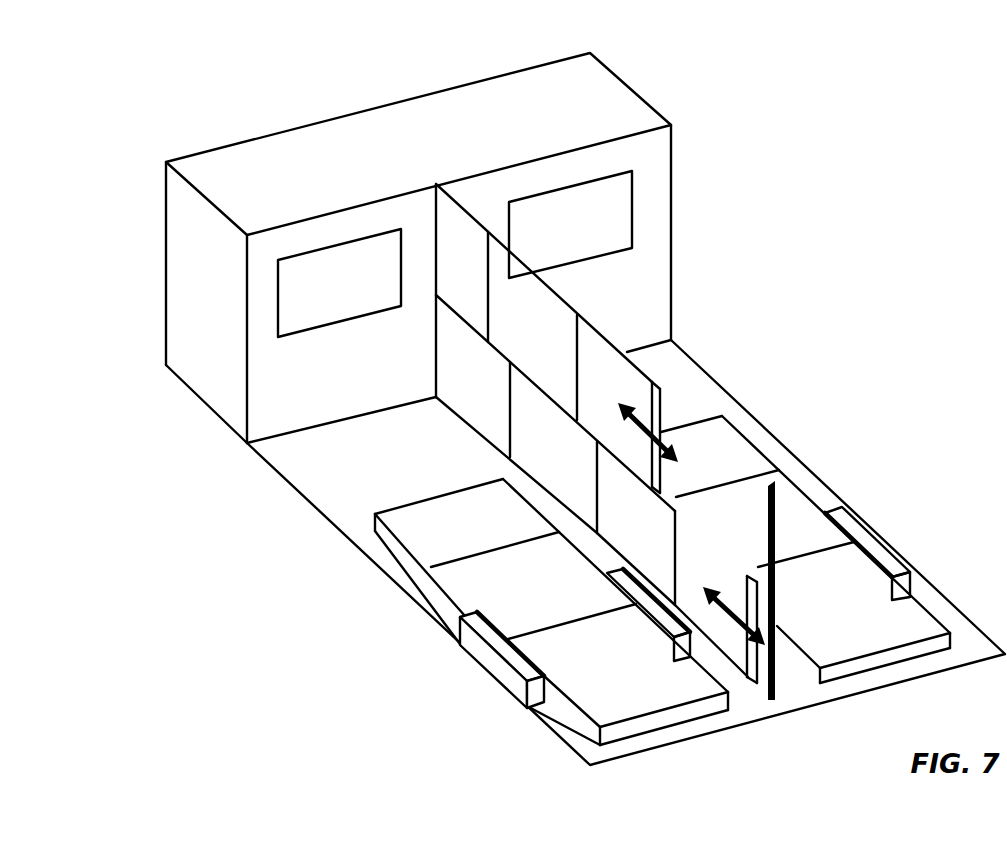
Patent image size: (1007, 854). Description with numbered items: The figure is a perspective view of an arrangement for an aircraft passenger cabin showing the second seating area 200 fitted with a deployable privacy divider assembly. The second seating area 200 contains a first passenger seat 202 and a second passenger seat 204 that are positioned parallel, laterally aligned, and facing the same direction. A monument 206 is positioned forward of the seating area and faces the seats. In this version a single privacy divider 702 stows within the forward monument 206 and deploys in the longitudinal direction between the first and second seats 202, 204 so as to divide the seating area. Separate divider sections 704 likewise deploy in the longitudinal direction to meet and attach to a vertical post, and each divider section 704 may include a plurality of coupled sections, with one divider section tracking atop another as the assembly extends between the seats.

The second seating area 200 is at (738, 365).
The first passenger seat 202 is at (543, 653).
The second passenger seat 204 is at (868, 593).
The monument 206 is at (590, 100).
The single privacy divider 702 is at (658, 372).
The divider sections 704 is at (447, 388).